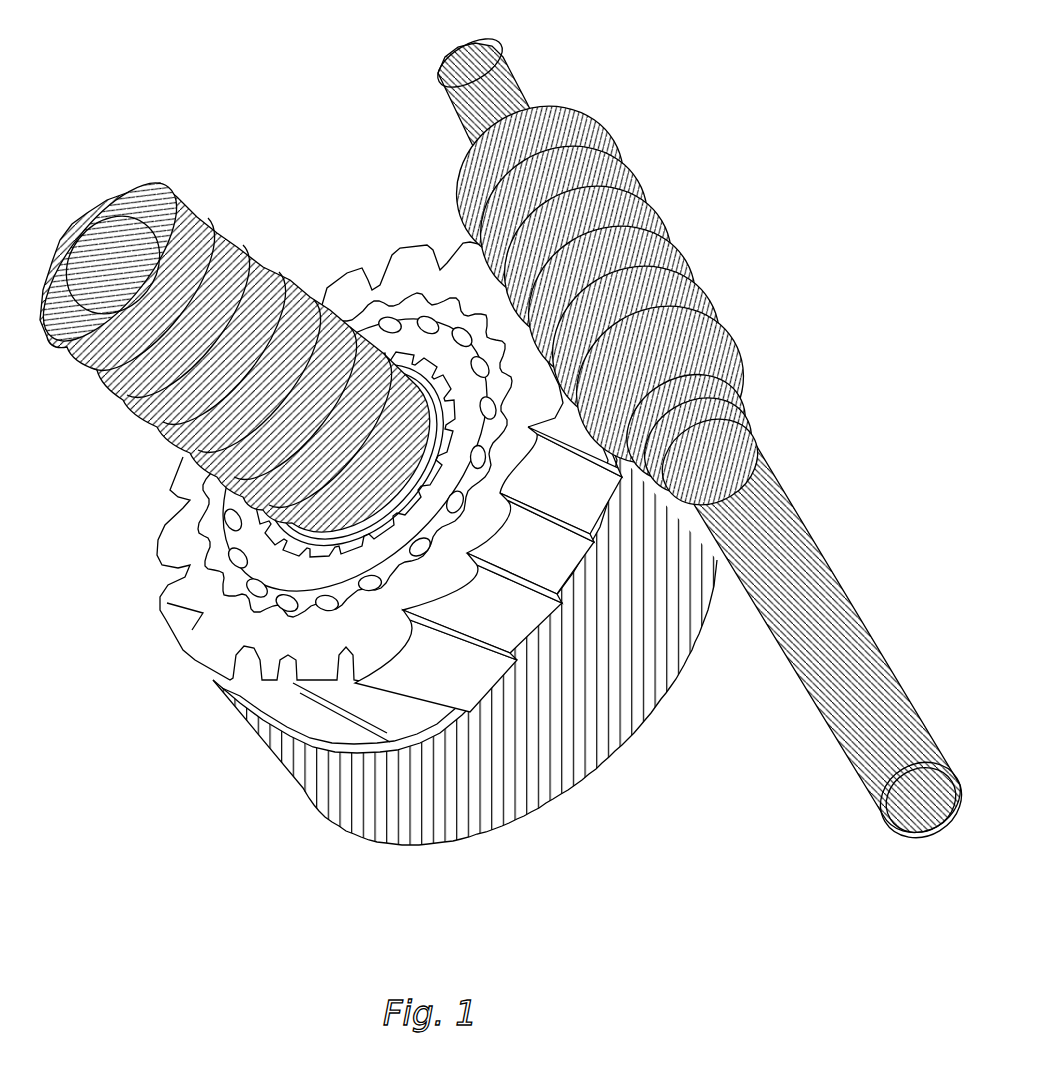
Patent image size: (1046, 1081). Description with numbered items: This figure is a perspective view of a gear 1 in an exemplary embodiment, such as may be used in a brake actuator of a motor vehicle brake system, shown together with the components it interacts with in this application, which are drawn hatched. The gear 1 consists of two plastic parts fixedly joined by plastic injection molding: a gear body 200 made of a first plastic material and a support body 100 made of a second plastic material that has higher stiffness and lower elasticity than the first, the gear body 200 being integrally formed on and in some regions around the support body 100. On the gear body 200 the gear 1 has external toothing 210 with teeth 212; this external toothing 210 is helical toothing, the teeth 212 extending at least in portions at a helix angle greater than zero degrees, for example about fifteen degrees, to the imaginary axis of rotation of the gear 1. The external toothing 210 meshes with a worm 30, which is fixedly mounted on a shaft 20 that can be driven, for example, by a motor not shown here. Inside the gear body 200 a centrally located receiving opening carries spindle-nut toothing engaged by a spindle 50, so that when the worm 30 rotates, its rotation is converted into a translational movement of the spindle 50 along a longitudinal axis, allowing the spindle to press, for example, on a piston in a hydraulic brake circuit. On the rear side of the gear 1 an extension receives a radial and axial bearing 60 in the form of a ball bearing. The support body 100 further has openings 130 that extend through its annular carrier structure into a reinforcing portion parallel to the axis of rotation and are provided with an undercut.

The gear 1 is at (389, 228).
The shaft 20 is at (863, 733).
The worm 30 is at (655, 268).
The spindle 50 is at (213, 237).
The radial and axial bearing 60 is at (530, 770).
The support body 100 is at (323, 626).
The openings 130 is at (230, 572).
The gear body 200 is at (353, 514).
The external toothing 210 is at (213, 683).
The teeth 212 is at (283, 710).